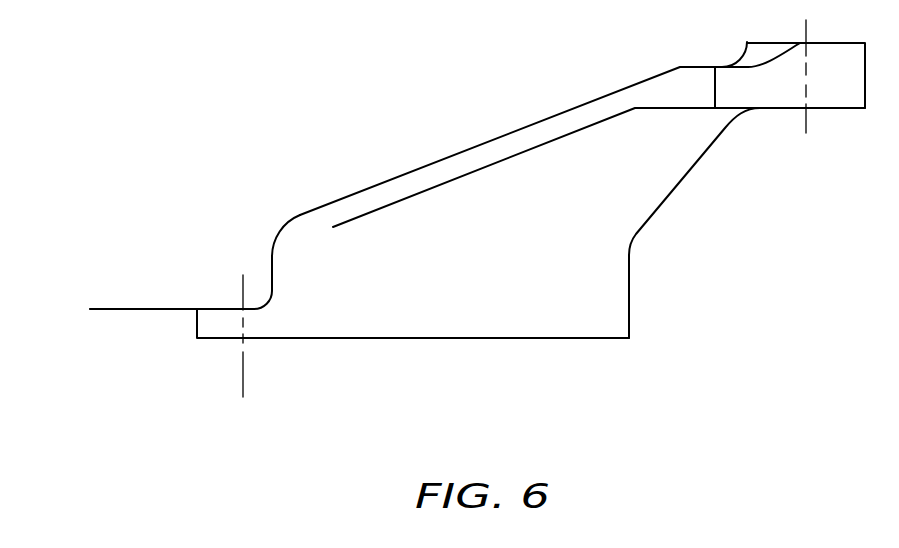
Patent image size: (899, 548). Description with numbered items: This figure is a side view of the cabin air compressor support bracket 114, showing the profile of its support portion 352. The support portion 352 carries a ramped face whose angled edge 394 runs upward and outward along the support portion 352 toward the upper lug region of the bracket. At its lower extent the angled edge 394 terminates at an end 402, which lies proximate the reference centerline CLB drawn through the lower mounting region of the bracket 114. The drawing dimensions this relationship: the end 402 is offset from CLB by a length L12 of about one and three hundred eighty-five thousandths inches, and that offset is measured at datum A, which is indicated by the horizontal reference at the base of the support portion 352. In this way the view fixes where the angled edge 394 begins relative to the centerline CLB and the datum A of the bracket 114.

The second CAC support bracket 114 is at (740, 285).
The support portion 352 is at (563, 298).
The angled edge 394 is at (457, 155).
The end 402 is at (322, 206).
The length L12 is at (238, 300).
The element CLB is at (243, 383).
The datum A is at (102, 310).